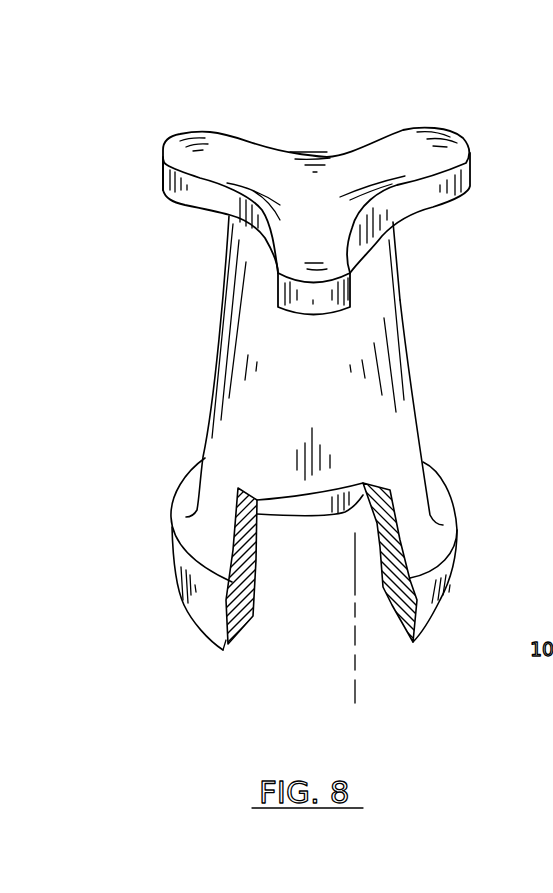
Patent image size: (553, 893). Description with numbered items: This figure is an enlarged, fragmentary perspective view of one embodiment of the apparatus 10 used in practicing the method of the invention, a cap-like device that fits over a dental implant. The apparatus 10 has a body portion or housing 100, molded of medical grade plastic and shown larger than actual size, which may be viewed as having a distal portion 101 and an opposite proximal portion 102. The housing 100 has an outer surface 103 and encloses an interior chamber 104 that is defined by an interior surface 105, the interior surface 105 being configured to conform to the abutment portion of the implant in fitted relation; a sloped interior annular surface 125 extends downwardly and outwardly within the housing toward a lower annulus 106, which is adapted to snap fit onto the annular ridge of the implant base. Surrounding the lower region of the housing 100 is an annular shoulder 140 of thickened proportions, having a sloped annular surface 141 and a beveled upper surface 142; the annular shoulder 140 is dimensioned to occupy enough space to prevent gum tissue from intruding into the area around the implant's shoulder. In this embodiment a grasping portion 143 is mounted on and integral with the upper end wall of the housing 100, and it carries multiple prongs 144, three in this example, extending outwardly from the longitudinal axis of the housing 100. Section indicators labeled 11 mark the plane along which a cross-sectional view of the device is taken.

The apparatus 10 is at (403, 292).
The housing 100 is at (240, 329).
The distal portion 101 is at (182, 583).
The proximal portion 102 is at (395, 223).
The outer surface 103 is at (402, 387).
The interior chamber 104 is at (365, 481).
The interior surface 105 is at (360, 508).
The lower annulus 106 is at (229, 648).
The sloped interior annular surface 125 is at (390, 611).
The annular shoulder 140 is at (177, 550).
The sloped annular surface 141 is at (442, 577).
The beveled upper surface 142 is at (188, 500).
The grasping portion 143 is at (323, 177).
The prongs 144 is at (207, 160).
The section line 11- 11 is at (348, 562).